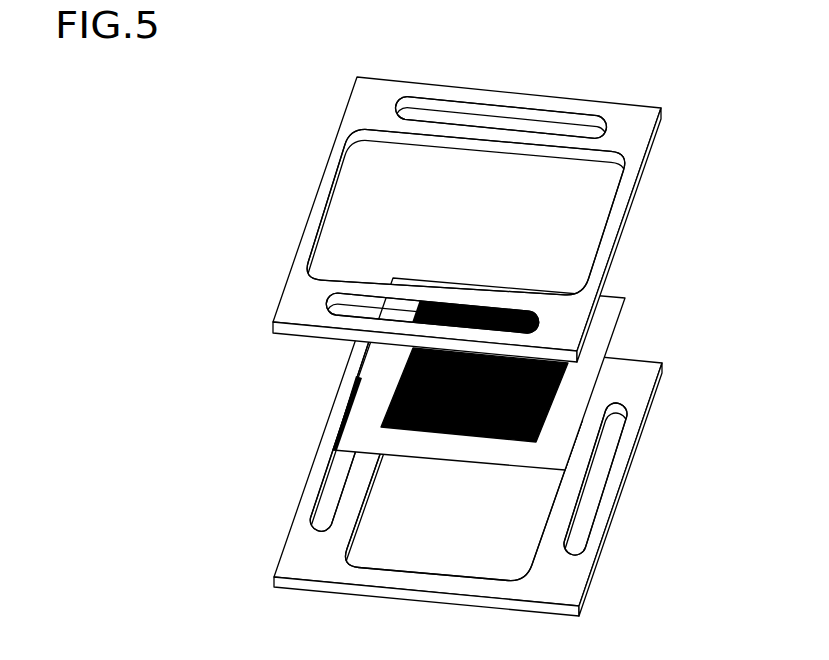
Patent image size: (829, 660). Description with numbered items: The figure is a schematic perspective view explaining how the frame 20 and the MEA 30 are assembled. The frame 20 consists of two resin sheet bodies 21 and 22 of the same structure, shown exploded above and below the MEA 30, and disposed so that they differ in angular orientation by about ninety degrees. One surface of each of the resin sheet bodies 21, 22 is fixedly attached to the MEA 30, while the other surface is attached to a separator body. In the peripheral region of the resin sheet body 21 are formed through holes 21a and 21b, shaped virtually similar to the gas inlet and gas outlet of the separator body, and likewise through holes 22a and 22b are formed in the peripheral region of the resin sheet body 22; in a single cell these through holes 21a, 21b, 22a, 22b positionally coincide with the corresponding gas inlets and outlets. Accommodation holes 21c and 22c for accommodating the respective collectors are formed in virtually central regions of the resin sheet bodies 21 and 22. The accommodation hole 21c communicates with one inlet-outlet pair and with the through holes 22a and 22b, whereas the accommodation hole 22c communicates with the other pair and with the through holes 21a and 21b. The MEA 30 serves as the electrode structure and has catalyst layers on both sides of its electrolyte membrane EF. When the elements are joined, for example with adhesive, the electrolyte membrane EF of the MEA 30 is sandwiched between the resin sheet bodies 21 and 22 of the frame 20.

The frame 20 is at (448, 346).
The resin sheet body 21 is at (487, 233).
The through hole 21a is at (587, 122).
The through hole 21b is at (349, 316).
The accommodation hole 21c is at (597, 253).
The resin sheet body 22 is at (464, 473).
The through hole 22a is at (604, 486).
The through hole 22b is at (321, 486).
The accommodation hole 22c is at (358, 531).
The MEA 30 is at (513, 374).
The electrolyte membrane EF is at (606, 337).